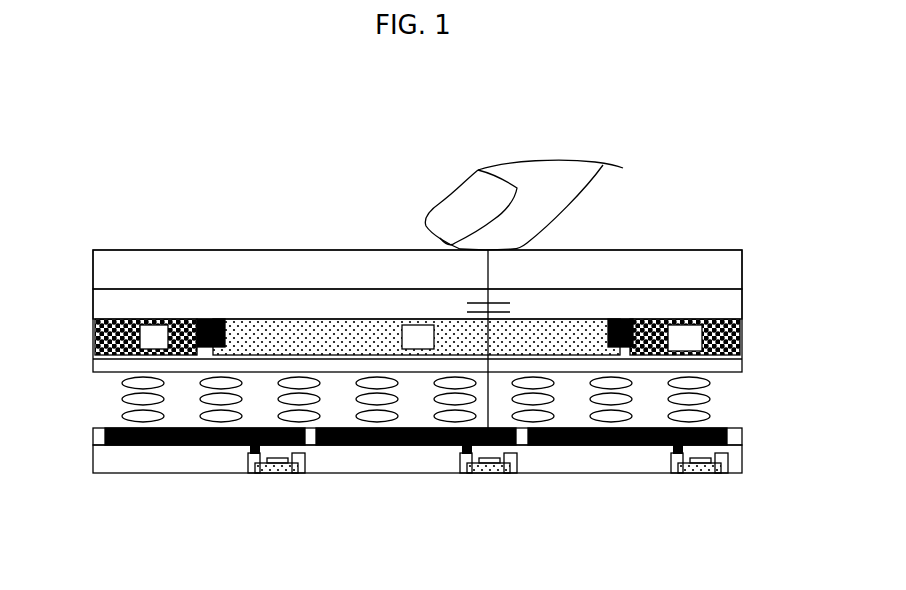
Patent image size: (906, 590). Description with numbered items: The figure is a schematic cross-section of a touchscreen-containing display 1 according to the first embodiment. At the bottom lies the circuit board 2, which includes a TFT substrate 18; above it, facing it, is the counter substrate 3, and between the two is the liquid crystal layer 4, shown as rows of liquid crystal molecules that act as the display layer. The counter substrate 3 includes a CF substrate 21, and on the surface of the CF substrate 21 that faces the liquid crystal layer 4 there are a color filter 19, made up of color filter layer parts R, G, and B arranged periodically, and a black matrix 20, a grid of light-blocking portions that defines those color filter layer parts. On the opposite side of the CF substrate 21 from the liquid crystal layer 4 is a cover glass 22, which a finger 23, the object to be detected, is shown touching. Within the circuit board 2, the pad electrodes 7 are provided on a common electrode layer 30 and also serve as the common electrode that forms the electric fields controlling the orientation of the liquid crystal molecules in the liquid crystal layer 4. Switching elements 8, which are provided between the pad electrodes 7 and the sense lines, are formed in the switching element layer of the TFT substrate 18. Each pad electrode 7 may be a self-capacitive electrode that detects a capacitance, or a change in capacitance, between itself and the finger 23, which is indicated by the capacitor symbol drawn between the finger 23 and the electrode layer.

The touchscreen-containing display 1 is at (715, 123).
The circuit board 2 is at (90, 460).
The counter substrate 3 is at (73, 308).
The liquid crystal layer 4 is at (87, 400).
The pad electrodes 7 is at (187, 437).
The switching elements 8 is at (278, 473).
The TFT substrate 18 is at (744, 458).
The color filter 19 is at (283, 318).
The black matrix 20 is at (620, 318).
The CF substrate 21 is at (744, 304).
The cover glass 22 is at (744, 271).
The finger 23 is at (449, 198).
The common electrode layer 30 is at (90, 434).